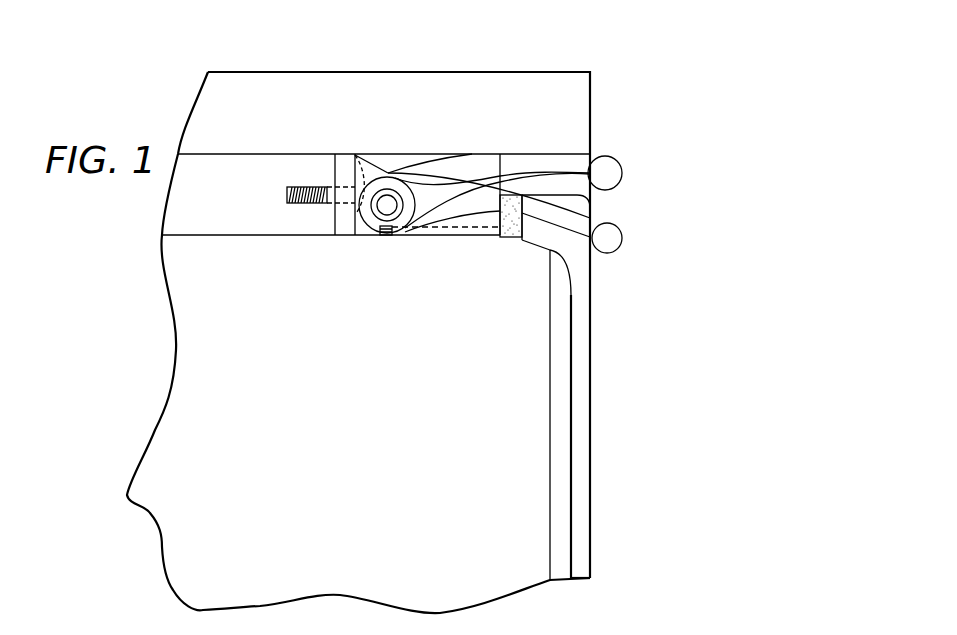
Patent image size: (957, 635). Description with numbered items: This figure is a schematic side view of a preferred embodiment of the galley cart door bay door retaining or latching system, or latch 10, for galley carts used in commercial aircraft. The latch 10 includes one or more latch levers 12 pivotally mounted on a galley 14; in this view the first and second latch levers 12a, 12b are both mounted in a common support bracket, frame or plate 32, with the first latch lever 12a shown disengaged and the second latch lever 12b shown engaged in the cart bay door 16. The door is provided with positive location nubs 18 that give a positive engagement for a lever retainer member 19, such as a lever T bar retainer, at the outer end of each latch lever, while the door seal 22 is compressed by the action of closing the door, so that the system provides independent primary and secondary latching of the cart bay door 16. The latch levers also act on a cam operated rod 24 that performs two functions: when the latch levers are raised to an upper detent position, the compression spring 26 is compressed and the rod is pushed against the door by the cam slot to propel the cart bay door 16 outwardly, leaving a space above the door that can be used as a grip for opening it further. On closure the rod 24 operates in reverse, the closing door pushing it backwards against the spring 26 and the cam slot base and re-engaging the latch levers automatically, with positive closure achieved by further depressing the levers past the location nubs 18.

The latch 10 is at (628, 62).
The latch lever 12 is at (582, 331).
The first latch lever 12a is at (540, 160).
The second latch lever 12b is at (575, 225).
The galley 14 is at (422, 118).
The cart bay door 16 is at (590, 466).
The positive location nub 18 is at (588, 222).
The lever retainer member 19 is at (608, 172).
The door seal 22 is at (507, 228).
The cam operated rod 24 is at (452, 228).
The compression spring 26 is at (388, 227).
The support bracket 32 is at (343, 222).